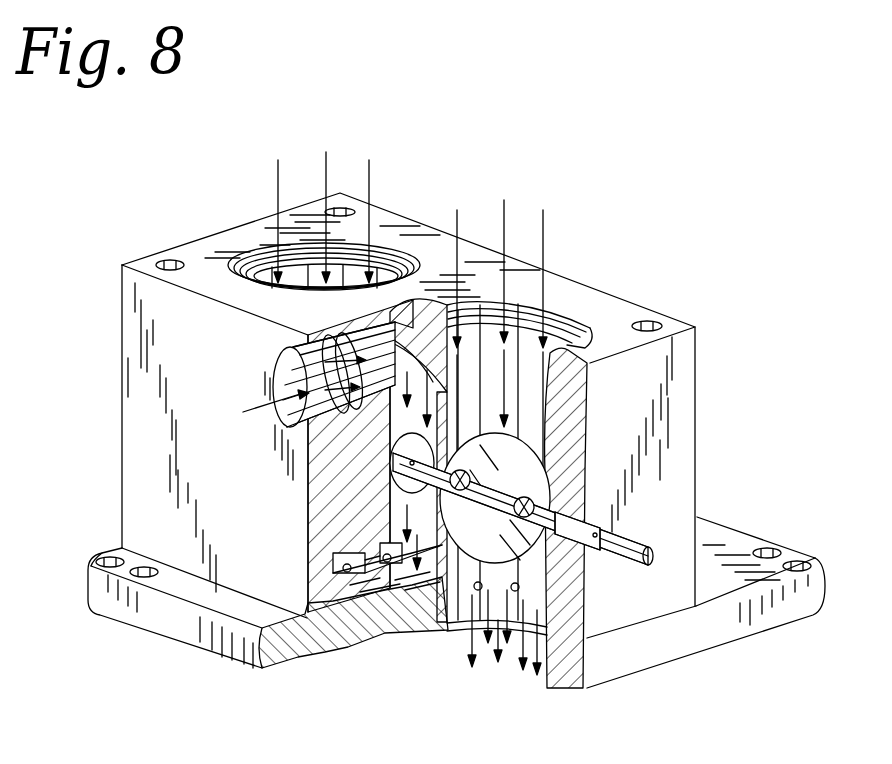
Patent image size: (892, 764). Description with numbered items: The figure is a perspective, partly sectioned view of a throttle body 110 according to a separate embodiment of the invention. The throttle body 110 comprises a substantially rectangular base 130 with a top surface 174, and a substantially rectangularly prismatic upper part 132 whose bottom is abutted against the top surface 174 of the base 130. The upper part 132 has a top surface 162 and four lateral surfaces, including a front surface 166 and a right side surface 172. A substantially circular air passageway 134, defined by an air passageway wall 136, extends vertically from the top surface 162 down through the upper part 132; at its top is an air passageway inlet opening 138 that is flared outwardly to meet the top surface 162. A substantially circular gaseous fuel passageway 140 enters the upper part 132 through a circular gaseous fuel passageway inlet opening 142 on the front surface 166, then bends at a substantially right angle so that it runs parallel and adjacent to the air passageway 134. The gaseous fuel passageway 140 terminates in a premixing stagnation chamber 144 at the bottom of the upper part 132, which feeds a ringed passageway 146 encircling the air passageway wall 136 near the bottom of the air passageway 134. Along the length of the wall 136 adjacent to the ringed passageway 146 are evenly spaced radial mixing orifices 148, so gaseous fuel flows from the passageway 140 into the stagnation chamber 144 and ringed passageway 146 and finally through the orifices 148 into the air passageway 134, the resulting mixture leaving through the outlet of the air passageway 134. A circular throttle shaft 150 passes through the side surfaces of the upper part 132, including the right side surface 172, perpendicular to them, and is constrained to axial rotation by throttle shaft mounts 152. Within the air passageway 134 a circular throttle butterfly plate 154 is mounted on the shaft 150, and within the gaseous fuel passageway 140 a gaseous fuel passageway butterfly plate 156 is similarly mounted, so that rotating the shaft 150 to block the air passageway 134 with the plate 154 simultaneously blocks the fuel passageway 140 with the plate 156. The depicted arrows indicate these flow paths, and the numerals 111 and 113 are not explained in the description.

The throttle body 110 is at (673, 433).
The inlet opening 111 is at (325, 188).
The side wall 113 is at (287, 400).
The base 130 is at (723, 630).
The upper part 132 is at (180, 332).
The air passageways 134 is at (578, 330).
The air passageway walls 136 is at (357, 272).
The air passageway inlet openings 138 is at (378, 283).
The gaseous fuel passageway 140 is at (305, 427).
The gaseous fuel passageway inlet opening 142 is at (272, 377).
The premixing stagnation chamber 144 is at (413, 557).
The ringed passageways 146 is at (590, 683).
The radial mixing orifices 148 is at (343, 570).
The throttle shaft 150 is at (657, 557).
The throttle shaft mounts 152 is at (600, 597).
The throttle butterfly plate 154 is at (440, 627).
The gaseous fuel passageway butterfly plate 156 is at (160, 600).
The top surface 162 is at (196, 258).
The front surface 166 is at (172, 528).
The right side surface 172 is at (673, 383).
The top surface 174 is at (223, 608).